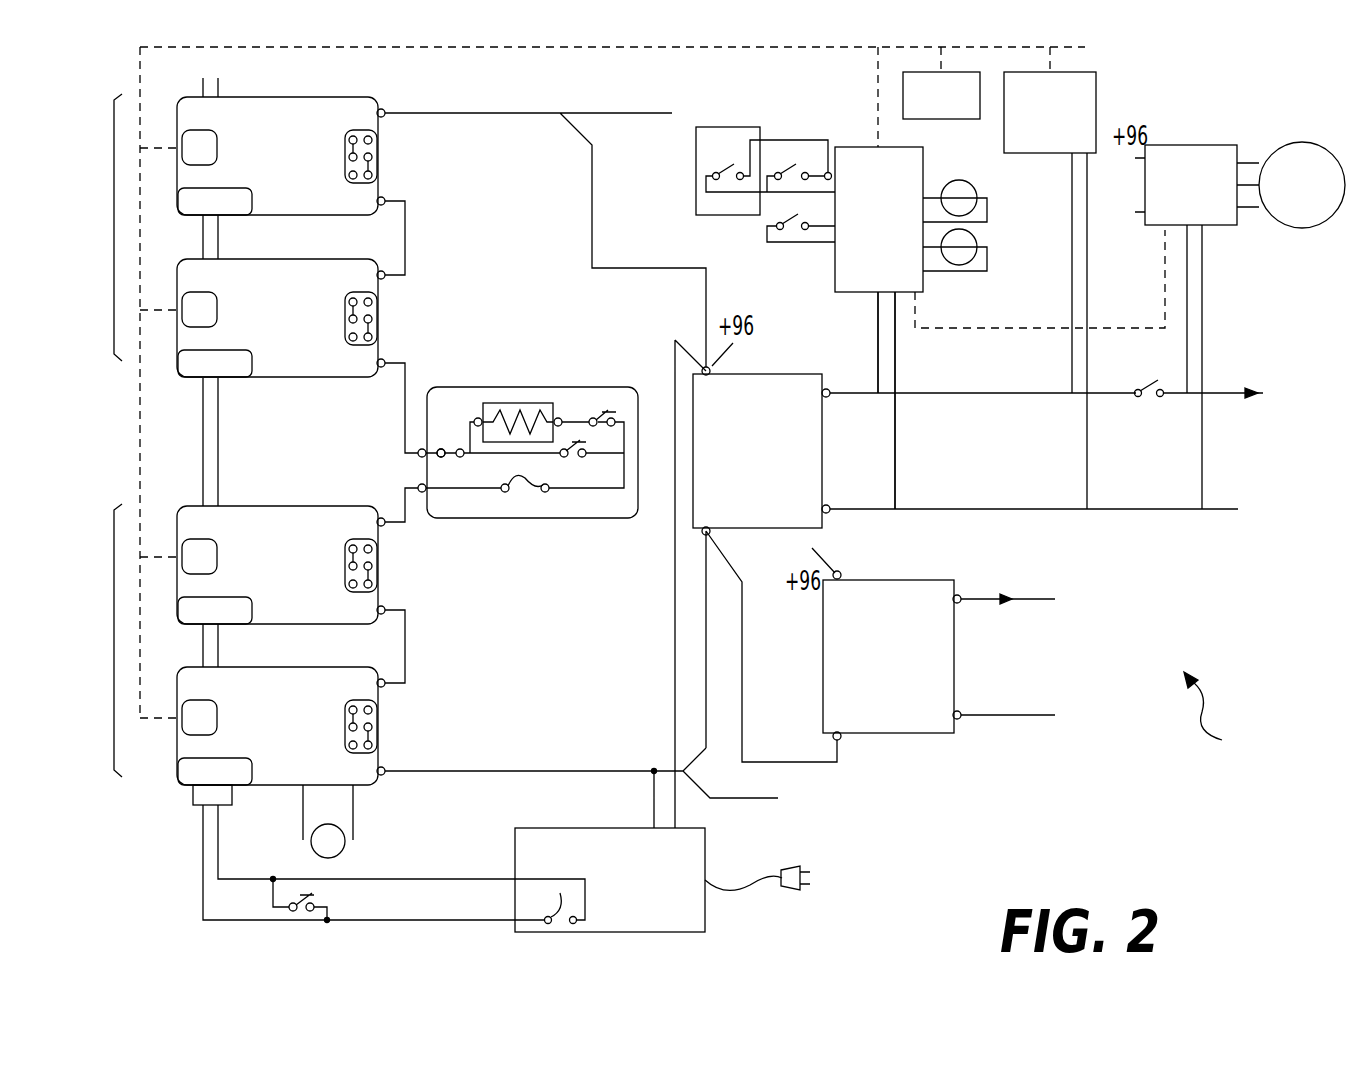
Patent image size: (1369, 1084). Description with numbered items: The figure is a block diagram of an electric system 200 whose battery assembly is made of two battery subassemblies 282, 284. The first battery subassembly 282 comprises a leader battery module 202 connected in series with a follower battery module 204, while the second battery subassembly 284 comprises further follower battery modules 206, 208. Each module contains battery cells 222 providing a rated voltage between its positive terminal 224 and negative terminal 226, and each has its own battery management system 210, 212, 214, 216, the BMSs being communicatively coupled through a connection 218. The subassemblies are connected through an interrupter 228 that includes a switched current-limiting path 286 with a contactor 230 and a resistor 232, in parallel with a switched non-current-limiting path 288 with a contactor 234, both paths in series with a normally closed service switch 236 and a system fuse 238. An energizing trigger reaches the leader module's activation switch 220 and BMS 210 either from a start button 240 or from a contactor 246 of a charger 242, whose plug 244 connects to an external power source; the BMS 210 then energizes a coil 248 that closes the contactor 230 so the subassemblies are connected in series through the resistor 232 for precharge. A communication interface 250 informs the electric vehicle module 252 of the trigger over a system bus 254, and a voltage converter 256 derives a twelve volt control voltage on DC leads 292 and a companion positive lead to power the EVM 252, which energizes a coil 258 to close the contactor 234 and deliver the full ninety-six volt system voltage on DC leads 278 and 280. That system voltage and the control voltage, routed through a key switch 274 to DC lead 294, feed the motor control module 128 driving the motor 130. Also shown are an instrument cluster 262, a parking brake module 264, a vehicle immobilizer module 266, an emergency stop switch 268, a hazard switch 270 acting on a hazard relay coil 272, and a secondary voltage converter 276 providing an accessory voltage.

The electric system 200 is at (1220, 714).
The battery module 202 is at (378, 735).
The battery module 204 is at (378, 568).
The battery module 206 is at (378, 318).
The battery module 208 is at (378, 138).
The battery management system 210 is at (252, 769).
The battery management system 212 is at (252, 609).
The battery management system 214 is at (252, 363).
The battery management system 216 is at (252, 201).
The connection 218 is at (218, 236).
The activation switch 220 is at (232, 795).
The battery cells 222 is at (360, 130).
The positive terminal 224 is at (442, 700).
The negative terminal 226 is at (385, 201).
The interrupter 228 is at (427, 476).
The contactor 230 is at (603, 412).
The resistor 232 is at (518, 403).
The contactor 234 is at (584, 445).
The service switch 236 is at (438, 450).
The system fuse 238 is at (540, 495).
The start button 240 is at (318, 898).
The charger 242 is at (578, 828).
The plug 244 is at (793, 892).
The contactor 246 is at (558, 905).
The coil 248 is at (345, 852).
The communication interface 250 is at (207, 130).
The electric vehicle module 252 is at (845, 295).
The system bus 254 is at (140, 412).
The voltage converter 256 is at (826, 420).
The coil 258 is at (977, 188).
The instrument cluster 262 is at (1096, 90).
The parking brake module 264 is at (935, 119).
The vehicle immobilizer module 266 is at (722, 127).
The emergency stop switch 268 is at (790, 166).
The hazard switch 270 is at (790, 230).
The hazard relay coil 272 is at (962, 272).
The key switch 274 is at (1148, 398).
The secondary voltage converter 276 is at (954, 650).
The DC lead 278 is at (645, 125).
The DC lead 280 is at (654, 790).
The battery subassembly 282 is at (114, 643).
The battery subassembly 284 is at (114, 225).
The switched current-limiting path 286 is at (570, 418).
The switched non-current-limiting path 288 is at (480, 460).
The DC lead 292 is at (830, 505).
The DC lead 294 is at (1185, 398).
The motor control module 128 is at (1210, 145).
The motor 130 is at (1290, 145).